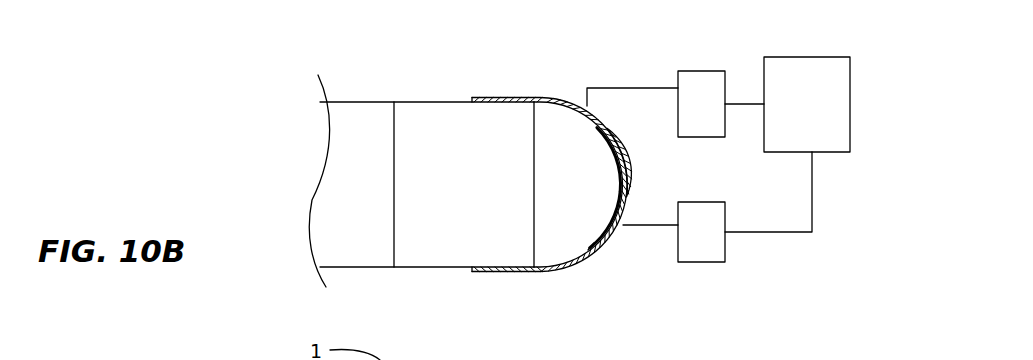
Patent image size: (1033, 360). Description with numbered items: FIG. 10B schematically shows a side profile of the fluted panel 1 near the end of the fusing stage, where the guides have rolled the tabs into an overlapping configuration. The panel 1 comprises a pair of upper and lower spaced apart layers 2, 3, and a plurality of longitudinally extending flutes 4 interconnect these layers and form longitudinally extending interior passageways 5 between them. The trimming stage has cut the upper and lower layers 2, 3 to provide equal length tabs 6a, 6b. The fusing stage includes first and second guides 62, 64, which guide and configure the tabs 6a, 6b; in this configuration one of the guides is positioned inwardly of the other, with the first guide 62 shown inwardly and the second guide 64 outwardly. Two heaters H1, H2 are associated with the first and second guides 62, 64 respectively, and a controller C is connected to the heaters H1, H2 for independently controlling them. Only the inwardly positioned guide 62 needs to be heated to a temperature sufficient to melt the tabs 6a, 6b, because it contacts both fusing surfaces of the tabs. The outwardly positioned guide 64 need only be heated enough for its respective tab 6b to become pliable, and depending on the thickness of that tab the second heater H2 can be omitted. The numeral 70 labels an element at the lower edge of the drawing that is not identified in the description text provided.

The panel 1 is at (415, 77).
The upper layer 2 is at (361, 100).
The lower layer 3 is at (368, 270).
The flutes 4 is at (534, 150).
The interior passageways 5 is at (452, 219).
The first guide 62 is at (568, 103).
The second guide 64 is at (603, 249).
The tab 6a is at (596, 242).
The tab 6b is at (605, 128).
The heater H1 is at (697, 67).
The heater H2 is at (705, 264).
The controller C is at (813, 115).
The element 70 is at (632, 359).